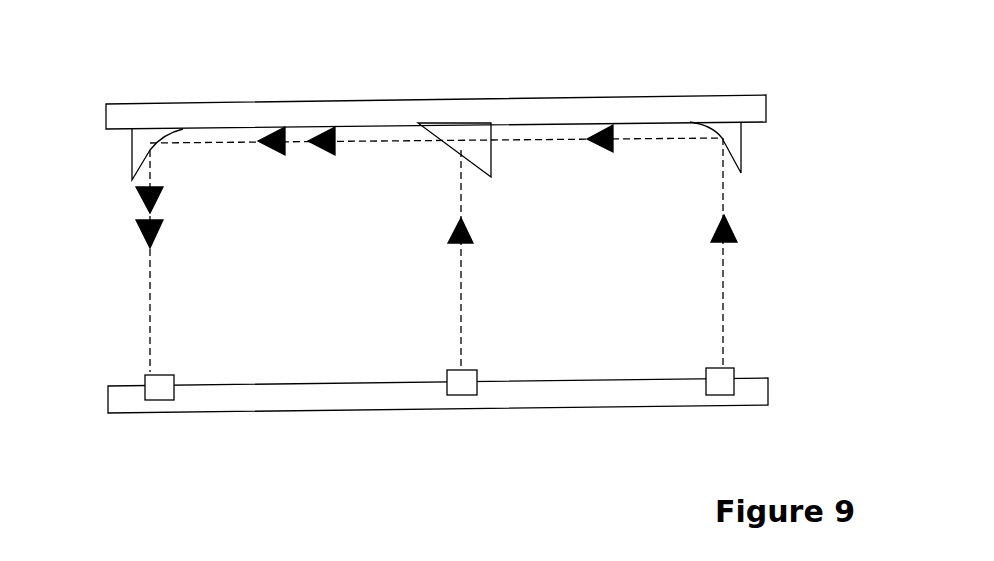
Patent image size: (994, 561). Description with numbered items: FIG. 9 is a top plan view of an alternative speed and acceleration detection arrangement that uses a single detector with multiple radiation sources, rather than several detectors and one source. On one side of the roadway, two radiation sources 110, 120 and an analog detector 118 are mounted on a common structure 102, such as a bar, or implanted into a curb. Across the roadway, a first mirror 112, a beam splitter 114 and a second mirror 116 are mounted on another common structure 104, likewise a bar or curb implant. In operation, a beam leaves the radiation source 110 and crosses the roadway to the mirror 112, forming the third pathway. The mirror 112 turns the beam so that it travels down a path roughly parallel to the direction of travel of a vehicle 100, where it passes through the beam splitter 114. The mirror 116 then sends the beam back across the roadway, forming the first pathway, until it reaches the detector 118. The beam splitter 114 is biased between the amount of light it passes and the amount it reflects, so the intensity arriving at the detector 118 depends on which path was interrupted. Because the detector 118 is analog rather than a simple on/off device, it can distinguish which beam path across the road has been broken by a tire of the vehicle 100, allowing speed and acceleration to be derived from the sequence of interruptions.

The vehicle 100 is at (780, 250).
The common structure 102 is at (567, 400).
The common structure 104 is at (562, 110).
The radiation source 110 is at (734, 368).
The mirror 112 is at (735, 138).
The beam splitter 114 is at (445, 147).
The mirror 116 is at (143, 144).
The detector 118 is at (174, 375).
The radiation source 120 is at (477, 370).